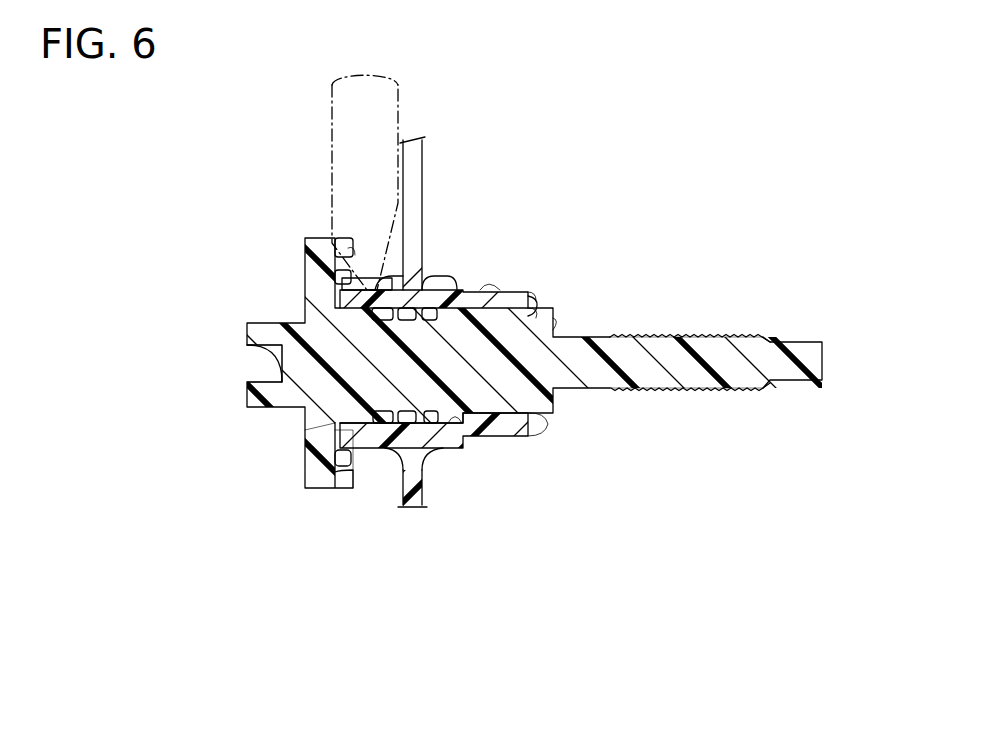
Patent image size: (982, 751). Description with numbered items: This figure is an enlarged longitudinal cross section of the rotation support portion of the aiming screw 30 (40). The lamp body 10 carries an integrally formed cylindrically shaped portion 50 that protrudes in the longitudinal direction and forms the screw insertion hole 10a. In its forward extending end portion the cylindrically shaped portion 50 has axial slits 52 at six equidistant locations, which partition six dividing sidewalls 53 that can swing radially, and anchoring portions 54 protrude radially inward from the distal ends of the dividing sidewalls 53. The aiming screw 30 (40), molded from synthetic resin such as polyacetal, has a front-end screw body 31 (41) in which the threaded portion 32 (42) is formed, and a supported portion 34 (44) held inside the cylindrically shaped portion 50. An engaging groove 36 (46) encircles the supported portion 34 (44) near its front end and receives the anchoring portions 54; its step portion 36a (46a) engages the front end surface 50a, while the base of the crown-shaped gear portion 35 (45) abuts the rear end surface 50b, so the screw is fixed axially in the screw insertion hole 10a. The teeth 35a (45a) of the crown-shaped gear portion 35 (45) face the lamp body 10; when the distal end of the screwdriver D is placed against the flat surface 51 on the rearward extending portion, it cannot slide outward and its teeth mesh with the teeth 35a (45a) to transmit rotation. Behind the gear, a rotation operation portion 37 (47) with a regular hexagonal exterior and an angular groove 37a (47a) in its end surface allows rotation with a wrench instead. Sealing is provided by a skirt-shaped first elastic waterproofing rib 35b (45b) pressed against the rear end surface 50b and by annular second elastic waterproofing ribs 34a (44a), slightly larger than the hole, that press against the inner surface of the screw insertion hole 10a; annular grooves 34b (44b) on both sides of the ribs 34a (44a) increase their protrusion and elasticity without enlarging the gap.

The screwdriver D is at (330, 93).
The lamp body 10 is at (422, 170).
The screw insertion hole 10a is at (428, 440).
The aiming screw 30 is at (751, 373).
The aiming screw 40 is at (781, 331).
The screw body 31 is at (822, 394).
The screw body 41 is at (770, 402).
The threaded portion 32 is at (711, 417).
The threaded portion 42 is at (723, 402).
The supported portion 34 is at (509, 360).
The supported portion 44 is at (563, 427).
The second elastic waterproofing rib 34a is at (381, 347).
The second elastic waterproofing rib 44a is at (405, 275).
The annular groove 34b is at (485, 441).
The annular groove 44b is at (417, 448).
The crown-shaped gear portion 35 is at (262, 244).
The crown-shaped gear portion 45 is at (305, 253).
The teeth 35a is at (254, 214).
The teeth 45a is at (348, 240).
The first elastic waterproofing rib 35b is at (238, 405).
The first elastic waterproofing rib 45b is at (343, 285).
The engaging groove 36 is at (635, 264).
The engaging groove 46 is at (530, 300).
The step portion 36a is at (652, 294).
The step portion 46a is at (533, 312).
The rotation operation portion 37 is at (264, 448).
The rotation operation portion 47 is at (253, 408).
The angular groove 37a is at (230, 335).
The angular groove 47a is at (240, 366).
The cylindrically shaped portion 50 is at (370, 470).
The front end surface 50a is at (542, 427).
The rear end surface 50b is at (312, 430).
The flat surface 51 is at (355, 248).
The slit 52 is at (522, 303).
The dividing sidewall 53 is at (478, 292).
The anchoring portion 54 is at (548, 330).